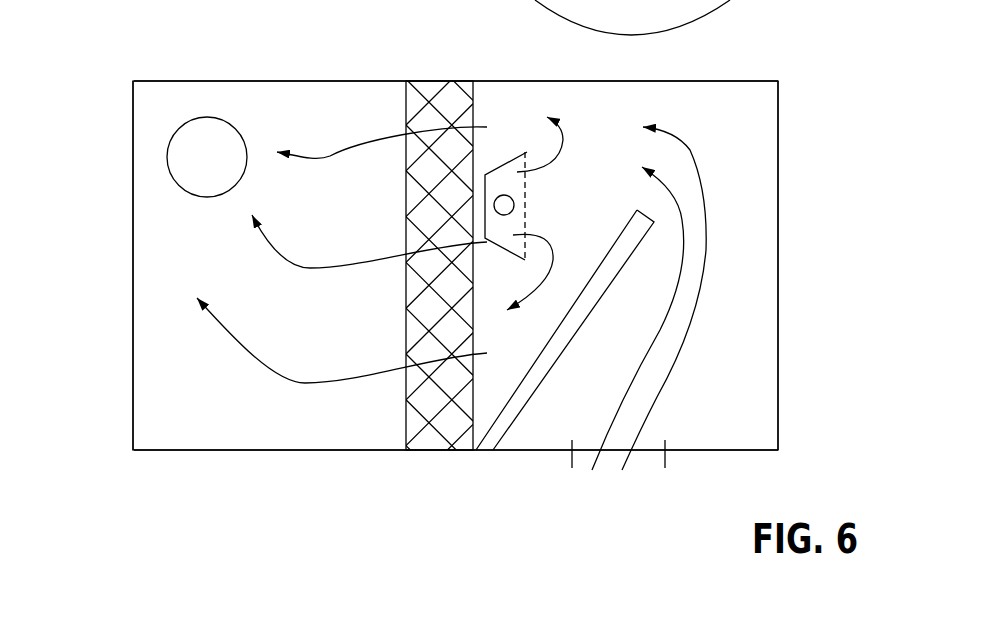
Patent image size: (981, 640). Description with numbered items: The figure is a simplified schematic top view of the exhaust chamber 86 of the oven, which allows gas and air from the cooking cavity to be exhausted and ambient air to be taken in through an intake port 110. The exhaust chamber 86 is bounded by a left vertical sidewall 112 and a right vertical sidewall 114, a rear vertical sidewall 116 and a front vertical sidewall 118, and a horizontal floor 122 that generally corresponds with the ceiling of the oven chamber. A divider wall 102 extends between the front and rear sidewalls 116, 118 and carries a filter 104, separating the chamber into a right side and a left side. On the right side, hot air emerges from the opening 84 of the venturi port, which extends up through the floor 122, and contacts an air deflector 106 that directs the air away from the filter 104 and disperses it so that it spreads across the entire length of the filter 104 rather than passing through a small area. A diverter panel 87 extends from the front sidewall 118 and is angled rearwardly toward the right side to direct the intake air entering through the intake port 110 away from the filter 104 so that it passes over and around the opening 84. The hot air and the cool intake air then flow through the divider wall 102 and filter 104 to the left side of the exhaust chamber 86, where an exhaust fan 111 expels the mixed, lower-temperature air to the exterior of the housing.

The exhaust chamber 86 is at (105, 110).
The exhaust fan 111 is at (195, 133).
The rear vertical sidewall 116 is at (338, 80).
The front vertical sidewall 118 is at (317, 450).
The left vertical sidewall 112 is at (133, 241).
The right vertical sidewall 114 is at (778, 253).
The filter 104 is at (493, 495).
The divider wall 102 is at (476, 267).
The opening 84 is at (509, 194).
The air deflector 106 is at (525, 152).
The diverter panel 87 is at (562, 353).
The intake port 110 is at (652, 459).
The horizontal floor 122 is at (750, 128).